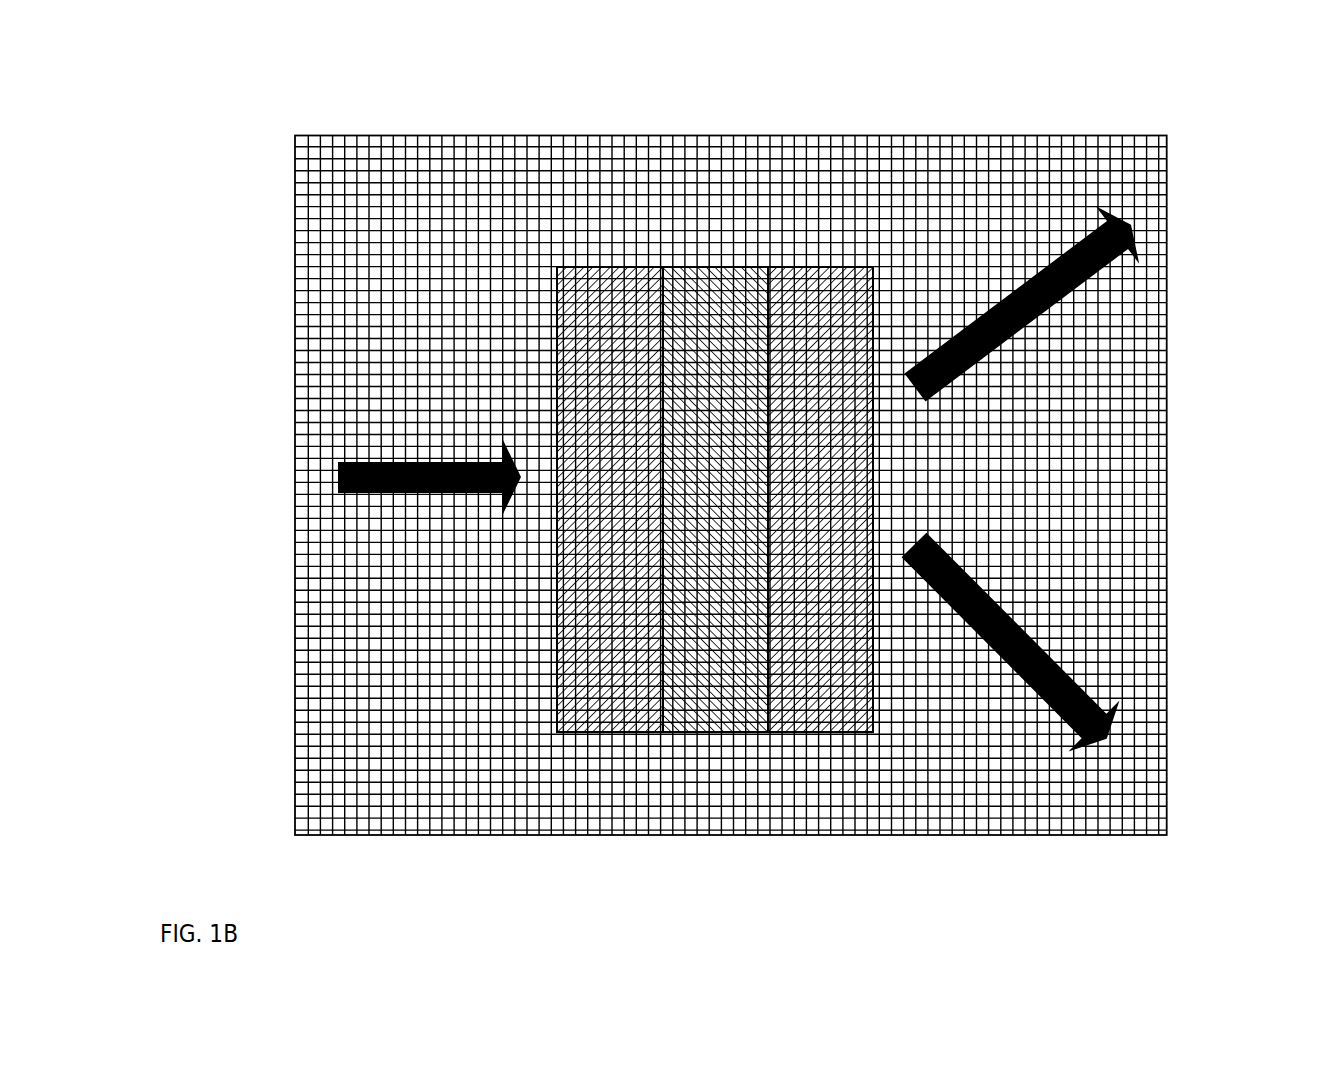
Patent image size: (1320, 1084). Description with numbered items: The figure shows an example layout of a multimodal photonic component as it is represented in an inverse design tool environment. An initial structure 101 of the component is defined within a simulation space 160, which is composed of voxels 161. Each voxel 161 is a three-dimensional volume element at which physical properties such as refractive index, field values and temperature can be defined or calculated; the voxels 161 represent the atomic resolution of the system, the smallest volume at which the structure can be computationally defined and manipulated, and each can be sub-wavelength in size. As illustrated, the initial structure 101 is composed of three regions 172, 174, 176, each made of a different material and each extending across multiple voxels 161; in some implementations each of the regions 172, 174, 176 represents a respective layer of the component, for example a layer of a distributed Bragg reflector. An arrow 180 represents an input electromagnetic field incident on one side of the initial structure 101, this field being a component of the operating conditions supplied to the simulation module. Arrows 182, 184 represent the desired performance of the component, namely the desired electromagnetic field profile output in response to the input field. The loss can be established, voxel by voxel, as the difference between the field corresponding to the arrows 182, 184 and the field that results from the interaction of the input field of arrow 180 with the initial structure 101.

The initial structure 101 is at (630, 502).
The simulation space 160 is at (232, 257).
The voxels 161 is at (1095, 157).
The region 172 is at (633, 695).
The region 174 is at (702, 693).
The region 176 is at (808, 695).
The arrow 180 is at (325, 477).
The arrow 182 is at (1065, 303).
The arrow 184 is at (1025, 618).